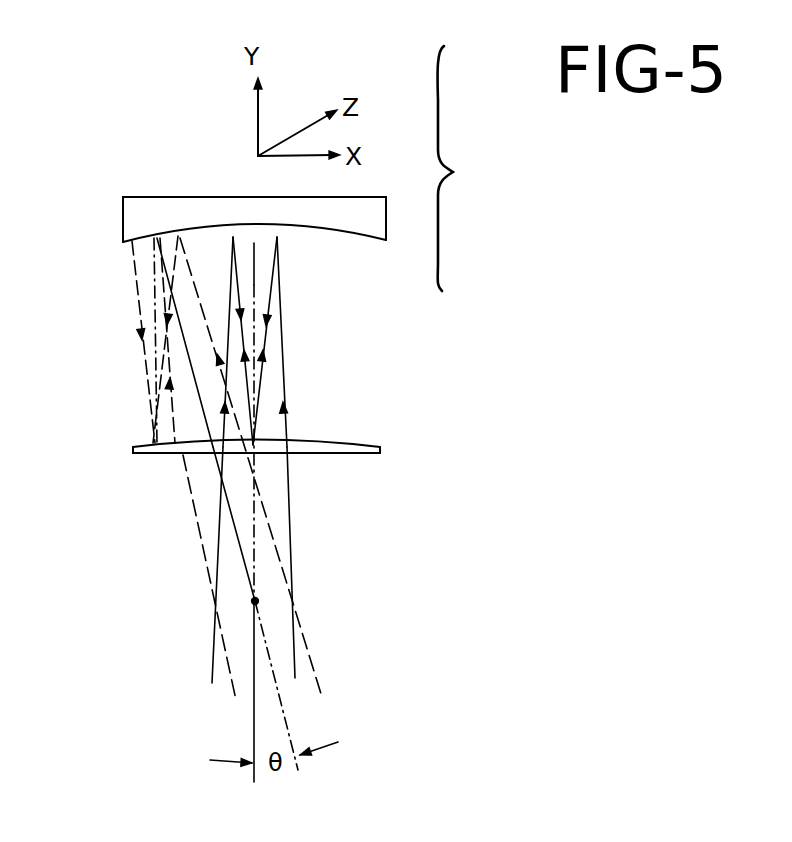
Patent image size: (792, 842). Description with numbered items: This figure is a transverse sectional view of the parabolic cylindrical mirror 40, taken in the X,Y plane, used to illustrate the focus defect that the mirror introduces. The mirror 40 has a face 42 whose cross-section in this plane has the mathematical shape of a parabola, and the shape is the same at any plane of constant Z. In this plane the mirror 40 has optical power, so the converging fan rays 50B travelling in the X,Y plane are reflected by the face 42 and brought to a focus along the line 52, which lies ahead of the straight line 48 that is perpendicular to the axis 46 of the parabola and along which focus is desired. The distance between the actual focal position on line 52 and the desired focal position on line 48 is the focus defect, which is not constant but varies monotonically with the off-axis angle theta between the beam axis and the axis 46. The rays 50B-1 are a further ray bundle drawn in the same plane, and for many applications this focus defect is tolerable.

The parabolic cylindrical mirror 40 is at (168, 196).
The face 42 is at (363, 241).
The straight line perpendicular to the axis of the parabola 48 is at (344, 455).
The line 52 is at (331, 442).
The axis of the parabola 46 is at (253, 717).
The off-axis light beam rays 50B-1 is at (260, 486).
The converging fan rays 50B is at (296, 636).